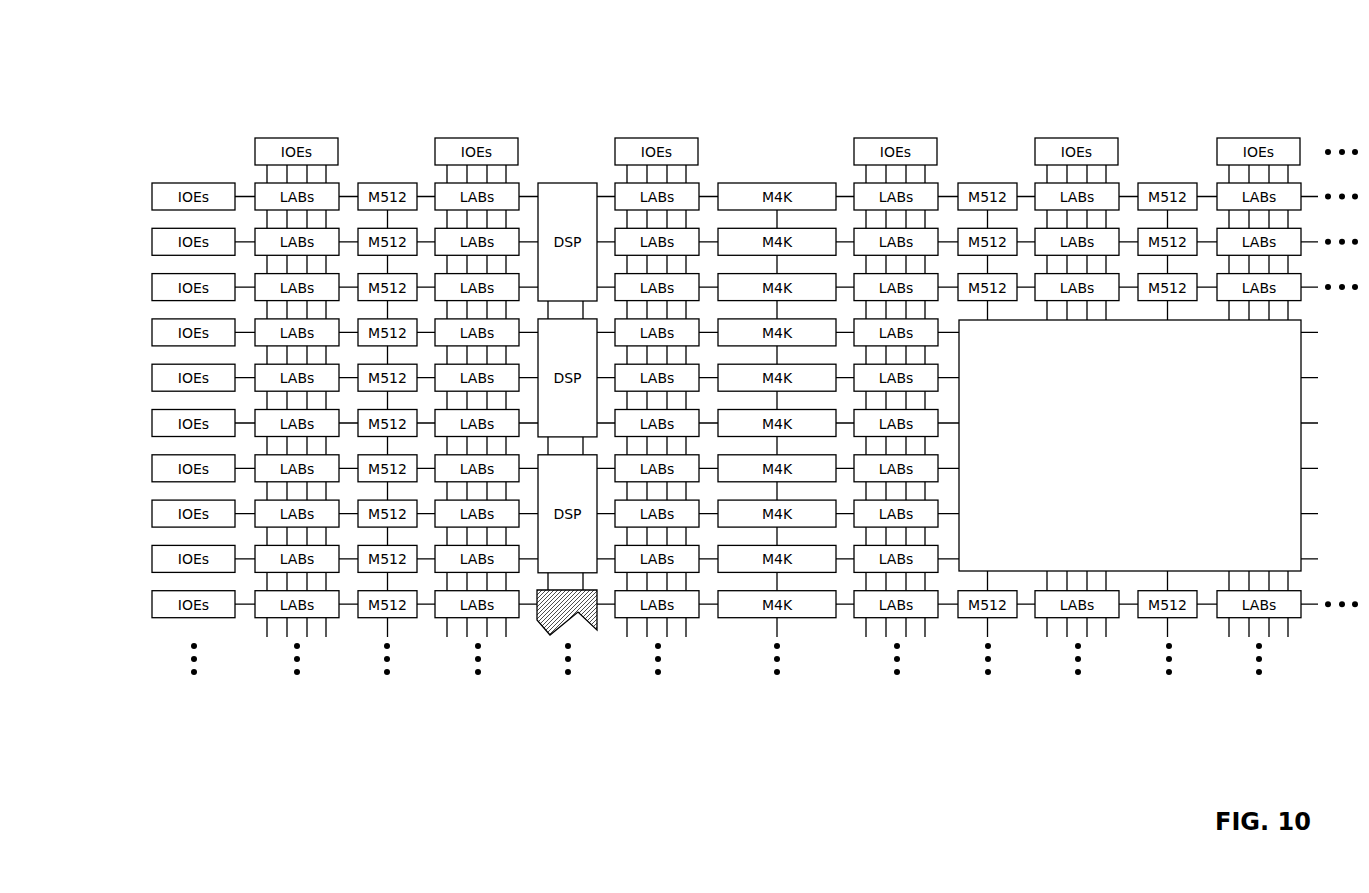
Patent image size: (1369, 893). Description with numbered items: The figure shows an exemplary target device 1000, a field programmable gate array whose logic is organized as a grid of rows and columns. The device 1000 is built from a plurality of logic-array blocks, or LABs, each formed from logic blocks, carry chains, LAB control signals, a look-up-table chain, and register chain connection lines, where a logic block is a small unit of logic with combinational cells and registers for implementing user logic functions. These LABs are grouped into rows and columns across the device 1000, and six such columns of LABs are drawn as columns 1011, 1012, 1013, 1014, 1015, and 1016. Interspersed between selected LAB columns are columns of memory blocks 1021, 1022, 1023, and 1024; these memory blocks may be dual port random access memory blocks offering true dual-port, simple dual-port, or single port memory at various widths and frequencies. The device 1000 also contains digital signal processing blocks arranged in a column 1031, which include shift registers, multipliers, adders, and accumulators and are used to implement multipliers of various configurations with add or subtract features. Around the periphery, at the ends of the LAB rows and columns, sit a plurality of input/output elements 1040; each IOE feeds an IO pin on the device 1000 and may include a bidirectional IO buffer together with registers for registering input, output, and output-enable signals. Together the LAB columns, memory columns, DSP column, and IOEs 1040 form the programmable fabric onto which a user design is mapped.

The device 1000 is at (217, 102).
The input/output elements 1040 is at (252, 152).
The column of LABs 1011 is at (283, 647).
The column of LABs 1012 is at (466, 647).
The column of LABs 1013 is at (647, 647).
The column of LABs 1014 is at (872, 647).
The column of LABs 1015 is at (1062, 647).
The column of LABs 1016 is at (1242, 647).
The column of memory blocks 1021 is at (405, 170).
The column of memory blocks 1022 is at (783, 170).
The column of memory blocks 1023 is at (1002, 170).
The column of memory blocks 1024 is at (1178, 170).
The column of DSP blocks 1031 is at (581, 170).